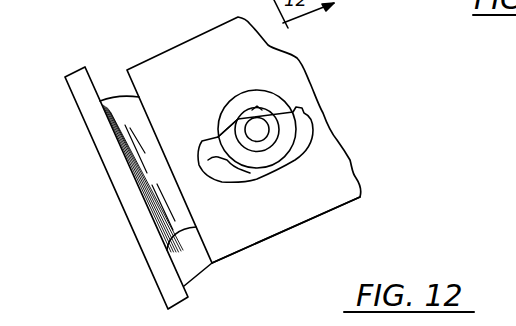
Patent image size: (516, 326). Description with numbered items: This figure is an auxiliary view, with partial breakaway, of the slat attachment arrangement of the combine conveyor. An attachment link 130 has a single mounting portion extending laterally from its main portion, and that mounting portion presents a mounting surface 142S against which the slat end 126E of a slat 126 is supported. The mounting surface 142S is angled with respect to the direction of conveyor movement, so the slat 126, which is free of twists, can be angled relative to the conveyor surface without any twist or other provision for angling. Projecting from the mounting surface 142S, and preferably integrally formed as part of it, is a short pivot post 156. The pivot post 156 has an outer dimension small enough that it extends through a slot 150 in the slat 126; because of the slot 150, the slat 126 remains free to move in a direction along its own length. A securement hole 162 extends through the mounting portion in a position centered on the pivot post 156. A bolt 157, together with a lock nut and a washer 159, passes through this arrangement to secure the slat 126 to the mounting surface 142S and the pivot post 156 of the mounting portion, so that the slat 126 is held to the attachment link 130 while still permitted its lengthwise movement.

The slat 126 is at (188, 53).
The slat end 126E is at (242, 227).
The attachment link 130 is at (128, 202).
The mounting surface 142S is at (148, 169).
The slot 150 is at (297, 111).
The pivot post 156 is at (267, 147).
The bolt 157 is at (237, 119).
The washer 159 is at (245, 108).
The securement hole 162 is at (256, 125).